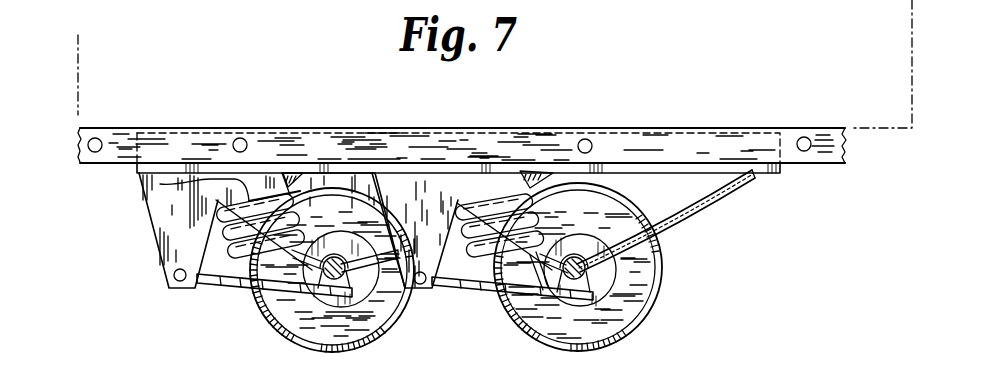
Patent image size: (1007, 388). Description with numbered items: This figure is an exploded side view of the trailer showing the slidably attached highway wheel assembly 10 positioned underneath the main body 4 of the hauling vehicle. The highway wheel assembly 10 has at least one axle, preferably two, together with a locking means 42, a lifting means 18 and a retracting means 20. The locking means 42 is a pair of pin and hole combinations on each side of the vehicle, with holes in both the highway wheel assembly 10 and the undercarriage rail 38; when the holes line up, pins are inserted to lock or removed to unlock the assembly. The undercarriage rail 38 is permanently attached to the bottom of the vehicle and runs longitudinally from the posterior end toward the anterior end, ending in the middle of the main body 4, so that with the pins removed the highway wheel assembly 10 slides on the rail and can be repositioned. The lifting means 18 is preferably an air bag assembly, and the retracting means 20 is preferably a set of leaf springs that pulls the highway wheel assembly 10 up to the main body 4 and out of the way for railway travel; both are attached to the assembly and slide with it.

The main body 4 is at (107, 104).
The slidably attached highway wheel assembly 10 is at (170, 215).
The lifting means 18 is at (160, 184).
The retracting means 20 is at (724, 195).
The undercarriage rail 38 is at (827, 138).
The locking means 42 is at (250, 130).